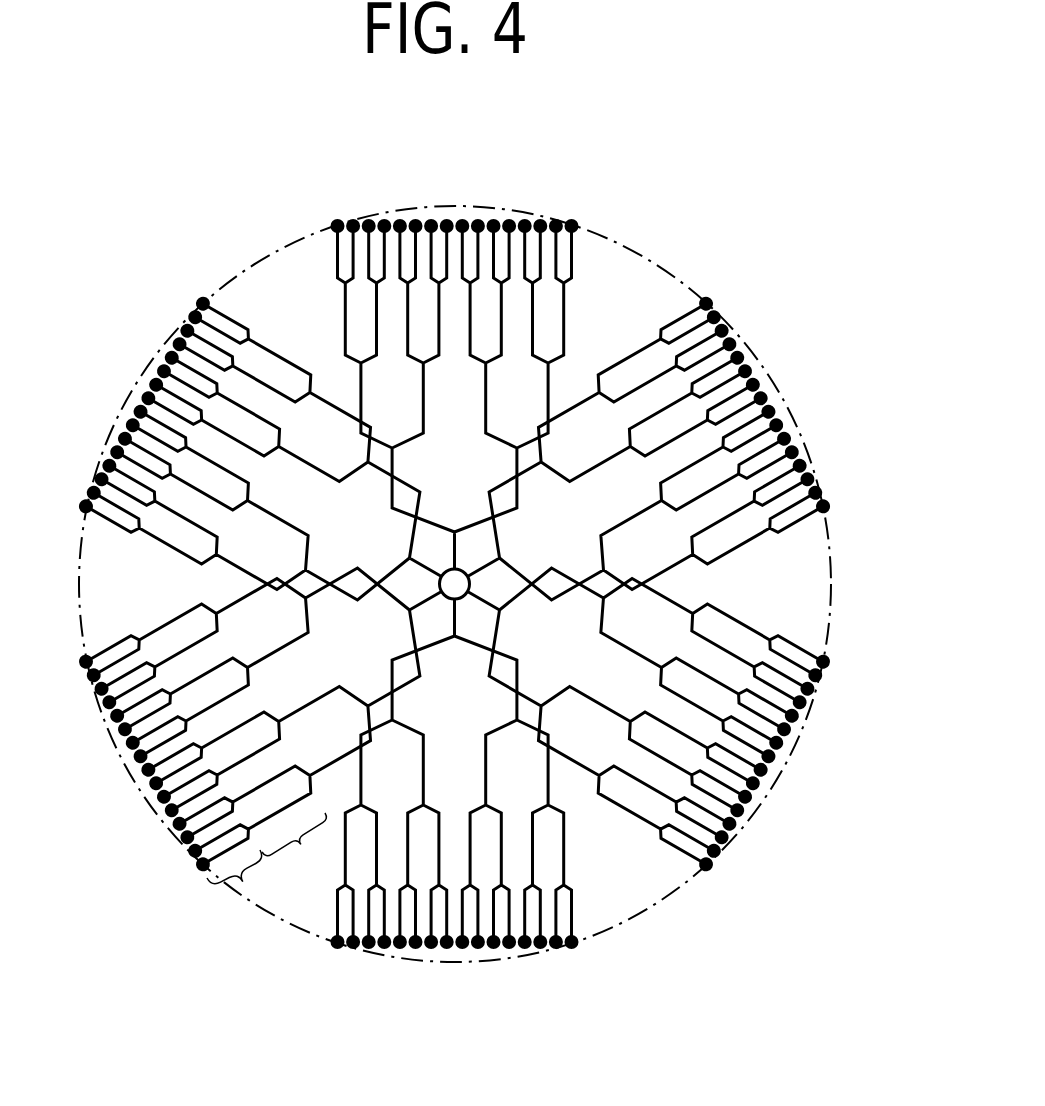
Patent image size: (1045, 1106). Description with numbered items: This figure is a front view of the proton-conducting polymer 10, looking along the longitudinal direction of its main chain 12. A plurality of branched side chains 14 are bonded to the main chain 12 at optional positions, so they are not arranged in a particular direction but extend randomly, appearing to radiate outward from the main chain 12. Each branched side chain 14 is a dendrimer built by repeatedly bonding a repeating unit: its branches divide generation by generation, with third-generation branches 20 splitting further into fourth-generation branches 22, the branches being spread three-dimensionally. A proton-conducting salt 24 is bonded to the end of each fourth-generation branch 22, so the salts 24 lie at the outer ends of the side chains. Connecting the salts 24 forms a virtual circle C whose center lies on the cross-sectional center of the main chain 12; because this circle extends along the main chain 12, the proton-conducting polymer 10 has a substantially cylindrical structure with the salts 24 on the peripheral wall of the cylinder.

The proton-conducting polymer 10 is at (730, 135).
The main chain 12 is at (458, 592).
The branched side chain 14 is at (318, 282).
The third-generation branch 20 is at (294, 853).
The fourth-generation branch 22 is at (234, 903).
The proton-conducting salt 24 is at (702, 300).
The virtual circle C is at (625, 925).